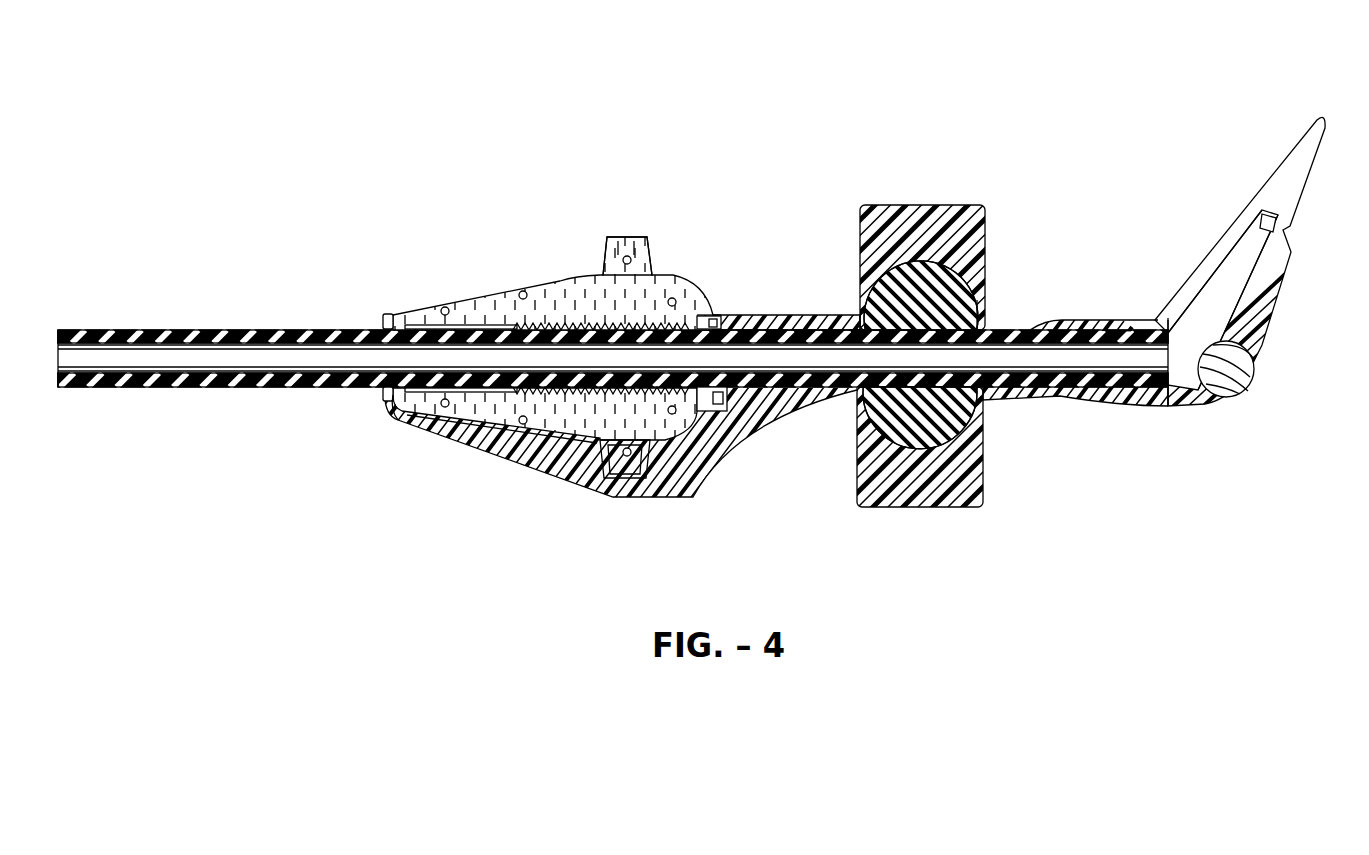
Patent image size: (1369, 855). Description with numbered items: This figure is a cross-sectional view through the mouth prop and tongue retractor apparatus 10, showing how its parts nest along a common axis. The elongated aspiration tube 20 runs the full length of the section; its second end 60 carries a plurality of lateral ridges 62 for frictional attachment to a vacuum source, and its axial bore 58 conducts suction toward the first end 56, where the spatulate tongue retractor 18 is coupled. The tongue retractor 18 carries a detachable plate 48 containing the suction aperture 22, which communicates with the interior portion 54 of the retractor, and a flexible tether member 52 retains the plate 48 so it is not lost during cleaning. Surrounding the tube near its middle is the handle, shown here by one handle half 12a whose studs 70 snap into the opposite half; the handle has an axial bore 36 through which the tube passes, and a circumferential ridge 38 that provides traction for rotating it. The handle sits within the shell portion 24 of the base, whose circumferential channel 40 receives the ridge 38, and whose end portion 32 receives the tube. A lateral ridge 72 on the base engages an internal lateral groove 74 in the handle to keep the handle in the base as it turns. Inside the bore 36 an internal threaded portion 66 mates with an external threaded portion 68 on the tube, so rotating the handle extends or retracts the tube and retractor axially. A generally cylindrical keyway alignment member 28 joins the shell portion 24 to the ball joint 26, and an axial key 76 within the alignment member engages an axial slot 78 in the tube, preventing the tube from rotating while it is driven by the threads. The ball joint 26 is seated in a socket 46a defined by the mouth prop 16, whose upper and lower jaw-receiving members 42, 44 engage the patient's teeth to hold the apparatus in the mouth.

The mouth prop and tongue retractor apparatus 10 is at (1040, 42).
The handle half 12a is at (575, 282).
The mouth prop 16 is at (913, 343).
The tongue retractor 18 is at (1240, 388).
The aspiration tube 20 is at (227, 330).
The suction aperture 22 is at (1240, 395).
The shell portion 24 is at (713, 470).
The ball joint 26 is at (982, 292).
The keyway alignment member 28 is at (840, 312).
The end portion 32 is at (385, 318).
The axial bore 36 is at (433, 323).
The ridge 38 is at (632, 237).
The circumferential channel 40 is at (632, 484).
The upper jaw-receiving member 42 is at (935, 205).
The lower jaw-receiving member 44 is at (927, 507).
The socket 46a is at (982, 316).
The detachable plate 48 is at (1256, 352).
The tether member 52 is at (1288, 232).
The interior portion 54 is at (1210, 310).
The first end 56 is at (1167, 400).
The axial bore 58 is at (165, 358).
The second end 60 is at (46, 383).
The lateral ridges 62 is at (72, 330).
The internal threaded portion 66 is at (520, 395).
The external threaded portion 68 is at (580, 447).
The studs 70 is at (523, 291).
The lateral ridge 72 is at (714, 327).
The internal lateral groove 74 is at (702, 312).
The axial key 76 is at (712, 320).
The axial slot 78 is at (850, 313).